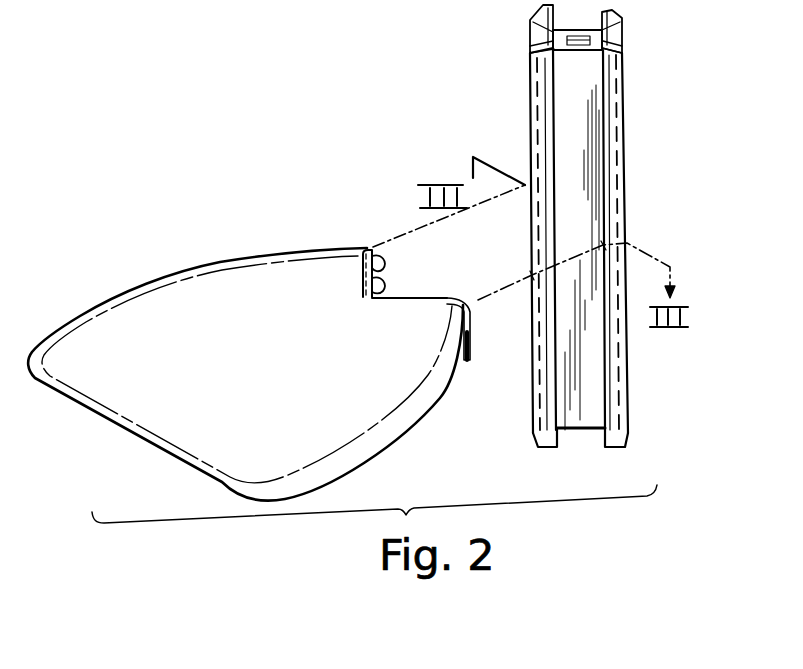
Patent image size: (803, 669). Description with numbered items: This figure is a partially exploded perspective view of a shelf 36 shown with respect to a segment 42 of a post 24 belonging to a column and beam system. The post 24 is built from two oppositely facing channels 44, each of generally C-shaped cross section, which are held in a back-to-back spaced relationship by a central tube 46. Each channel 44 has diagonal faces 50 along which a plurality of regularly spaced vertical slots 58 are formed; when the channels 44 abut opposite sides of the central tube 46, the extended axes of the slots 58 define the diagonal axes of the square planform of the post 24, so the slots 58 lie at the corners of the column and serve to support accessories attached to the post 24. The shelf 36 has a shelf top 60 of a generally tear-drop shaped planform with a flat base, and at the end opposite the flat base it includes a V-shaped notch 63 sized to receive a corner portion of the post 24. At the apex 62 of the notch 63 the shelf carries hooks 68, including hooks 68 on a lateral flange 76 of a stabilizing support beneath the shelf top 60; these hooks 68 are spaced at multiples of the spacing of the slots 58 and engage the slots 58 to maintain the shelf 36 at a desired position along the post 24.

The post 24 is at (485, 83).
The shelf 36 is at (196, 233).
The segment 42 is at (532, 338).
The channels 44 is at (530, 68).
The central tube 46 is at (597, 42).
The diagonal faces 50 is at (625, 445).
The slots 58 is at (628, 184).
The shelf top 60 is at (77, 312).
The apex 62 is at (368, 297).
The V-shaped notch 63 is at (428, 286).
The hooks 68 is at (398, 281).
The lateral flange 76 is at (374, 257).